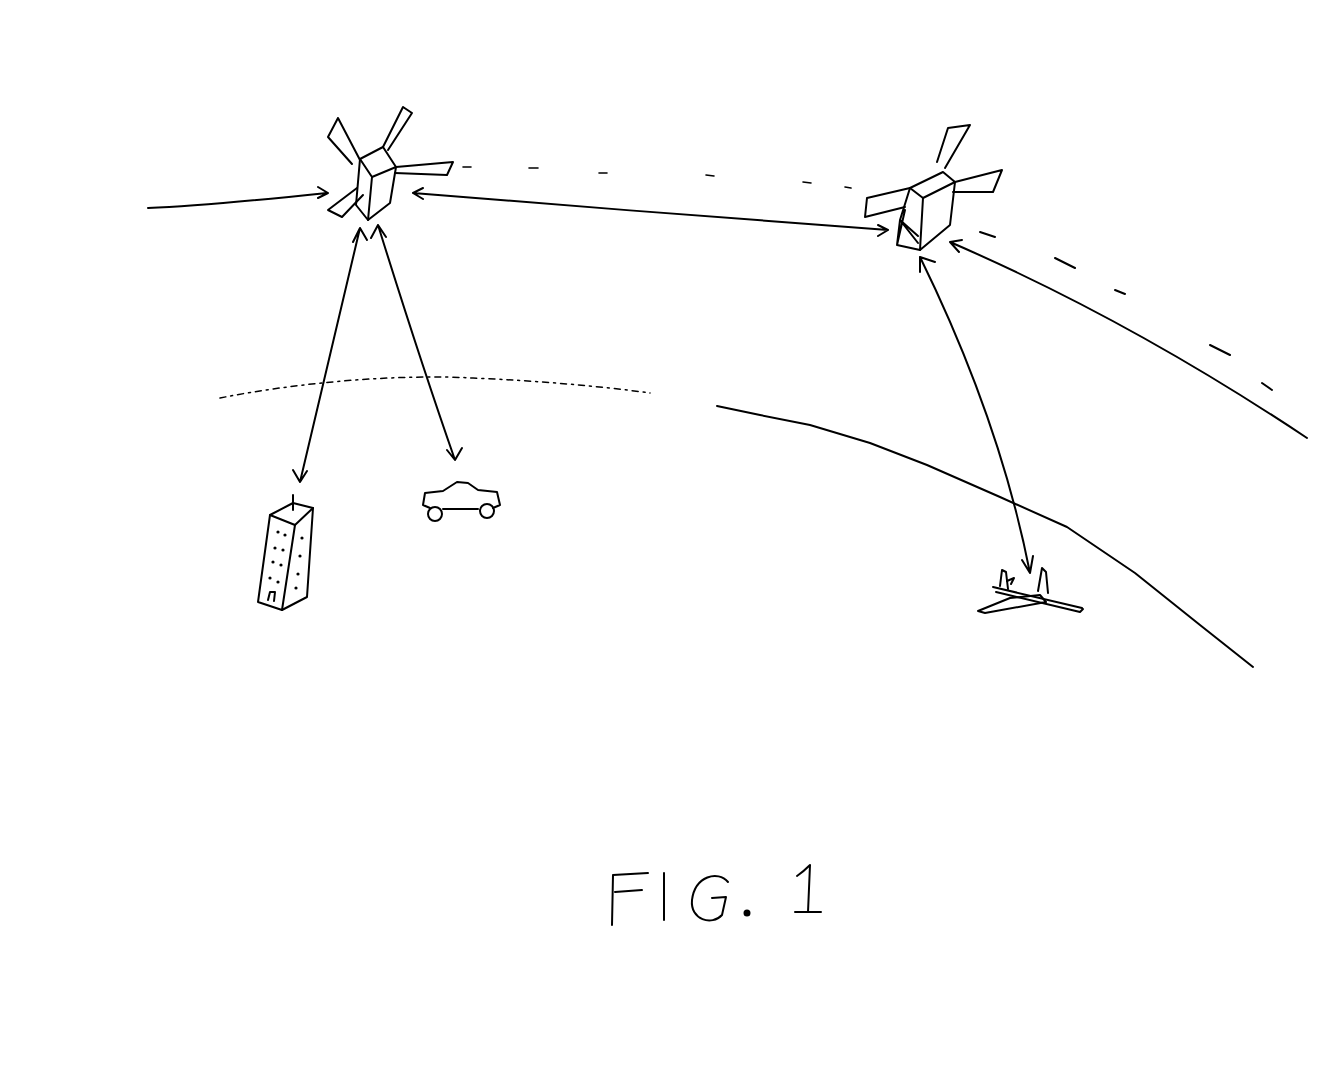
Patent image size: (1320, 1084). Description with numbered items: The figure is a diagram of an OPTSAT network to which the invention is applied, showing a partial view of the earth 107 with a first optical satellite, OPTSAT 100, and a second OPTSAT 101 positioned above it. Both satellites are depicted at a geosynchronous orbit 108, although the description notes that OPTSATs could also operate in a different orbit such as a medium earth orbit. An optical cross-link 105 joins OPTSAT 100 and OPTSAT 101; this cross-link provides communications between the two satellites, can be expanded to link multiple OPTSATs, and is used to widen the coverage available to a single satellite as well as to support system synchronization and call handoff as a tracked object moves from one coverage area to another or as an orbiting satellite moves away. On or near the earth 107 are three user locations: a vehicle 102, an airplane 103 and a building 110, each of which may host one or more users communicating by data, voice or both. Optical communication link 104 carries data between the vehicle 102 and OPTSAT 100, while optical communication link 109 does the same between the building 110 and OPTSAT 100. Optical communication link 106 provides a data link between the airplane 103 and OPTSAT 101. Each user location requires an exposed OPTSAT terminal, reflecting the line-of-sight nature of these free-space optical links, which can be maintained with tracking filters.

The first optical satellite (OPTSAT) 100 is at (430, 95).
The second OPTSAT 101 is at (995, 140).
The vehicle 102 is at (495, 470).
The airplane 103 is at (1055, 623).
The optical communication link 104 is at (414, 320).
The optical cross-link 105 is at (642, 219).
The optical communication link 106 is at (990, 403).
The earth 107 is at (1200, 620).
The geosynchronous orbit 108 is at (1227, 337).
The optical communication link 109 is at (322, 340).
The building 110 is at (247, 548).